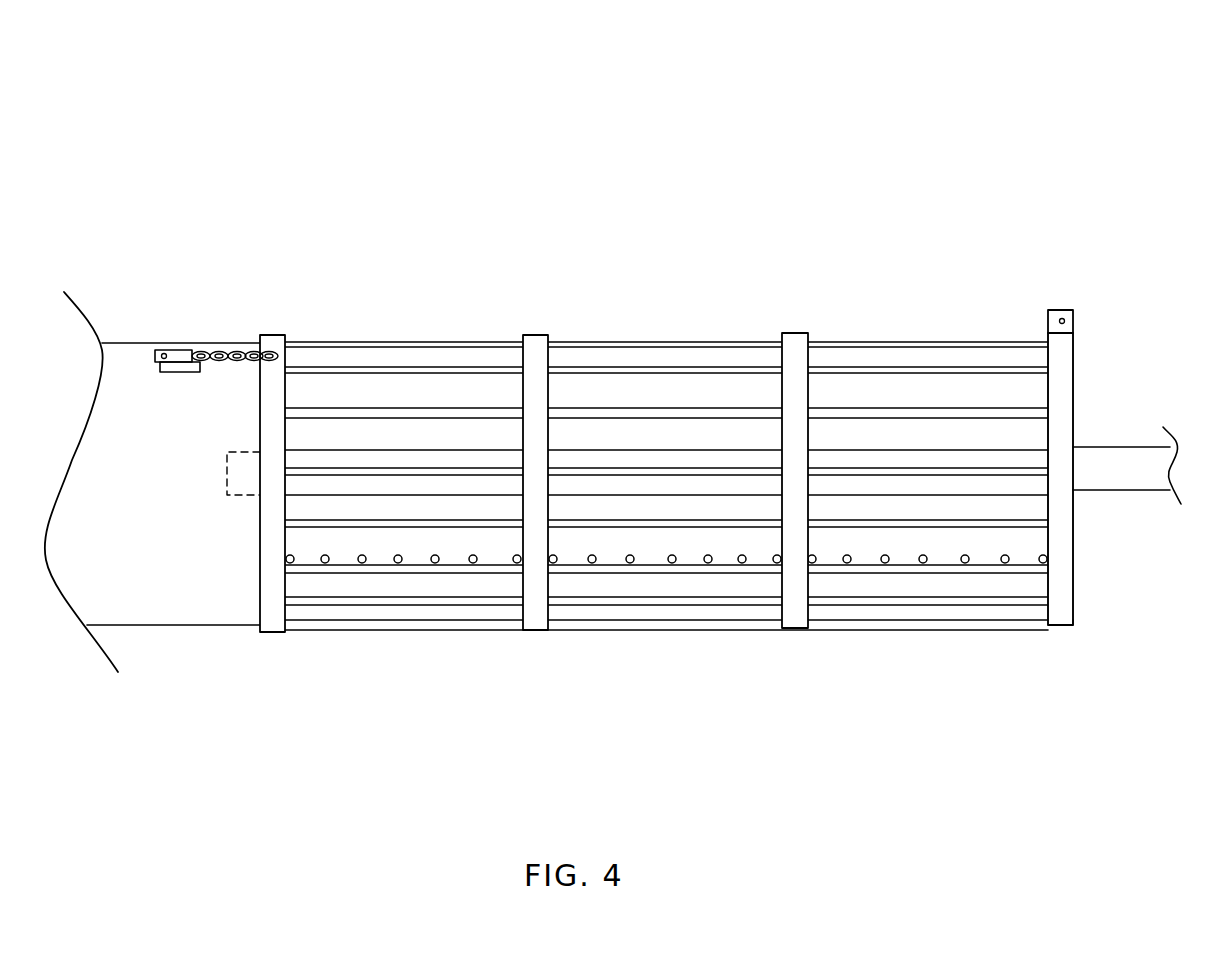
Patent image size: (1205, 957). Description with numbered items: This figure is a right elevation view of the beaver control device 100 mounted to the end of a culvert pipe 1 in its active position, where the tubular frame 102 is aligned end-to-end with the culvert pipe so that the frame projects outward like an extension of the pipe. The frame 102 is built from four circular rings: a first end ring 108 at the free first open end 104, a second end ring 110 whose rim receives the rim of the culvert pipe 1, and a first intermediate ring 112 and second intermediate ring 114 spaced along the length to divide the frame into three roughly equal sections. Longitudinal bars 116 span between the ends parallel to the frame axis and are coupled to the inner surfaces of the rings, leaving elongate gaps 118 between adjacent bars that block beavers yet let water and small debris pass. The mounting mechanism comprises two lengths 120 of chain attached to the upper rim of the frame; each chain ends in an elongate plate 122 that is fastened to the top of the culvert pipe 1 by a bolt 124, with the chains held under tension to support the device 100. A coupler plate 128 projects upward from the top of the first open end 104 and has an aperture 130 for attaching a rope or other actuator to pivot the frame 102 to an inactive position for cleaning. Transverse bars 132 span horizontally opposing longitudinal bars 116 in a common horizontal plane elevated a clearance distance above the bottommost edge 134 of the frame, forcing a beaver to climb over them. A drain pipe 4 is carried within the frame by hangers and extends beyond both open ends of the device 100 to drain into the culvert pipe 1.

The beaver control device 100 is at (633, 114).
The culvert pipe 1 is at (157, 604).
The pipe 4 is at (1122, 460).
The frame 102 is at (1133, 204).
The first open end 104 is at (1108, 573).
The first end ring 108 is at (1057, 628).
The second end ring 110 is at (270, 632).
The first intermediate ring 112 is at (795, 630).
The second intermediate ring 114 is at (533, 632).
The longitudinal bars 116 is at (428, 412).
The gaps 118 is at (628, 397).
The lengths of chain 120 is at (232, 306).
The elongate plate 122 is at (175, 353).
The bolt 124 is at (173, 368).
The coupler plate 128 is at (1075, 318).
The aperture 130 is at (1060, 320).
The transverse bars 132 is at (628, 562).
The bottommost edge 134 is at (1076, 622).